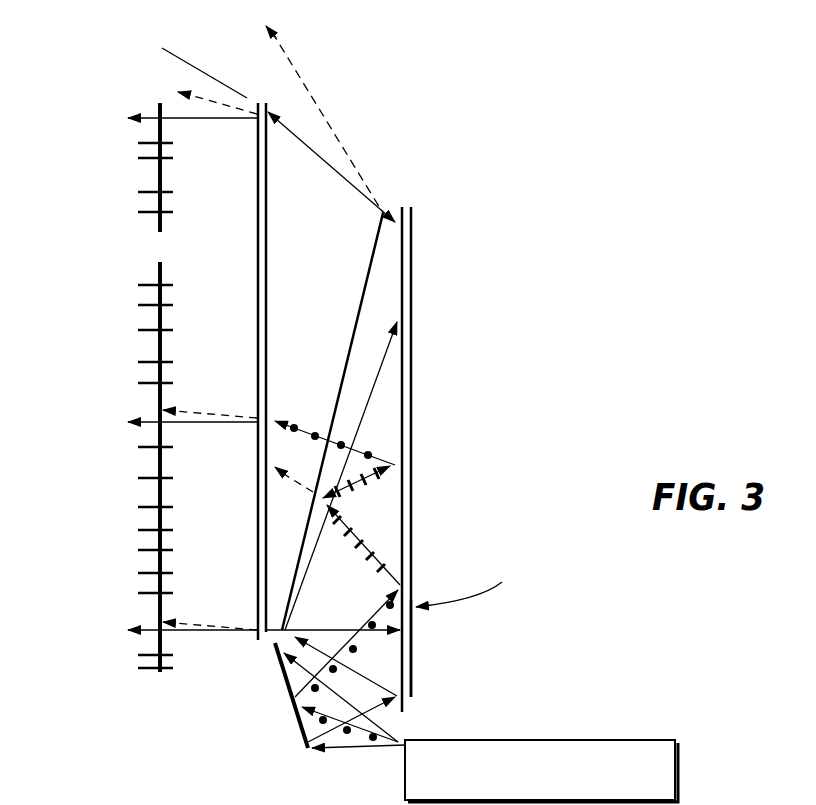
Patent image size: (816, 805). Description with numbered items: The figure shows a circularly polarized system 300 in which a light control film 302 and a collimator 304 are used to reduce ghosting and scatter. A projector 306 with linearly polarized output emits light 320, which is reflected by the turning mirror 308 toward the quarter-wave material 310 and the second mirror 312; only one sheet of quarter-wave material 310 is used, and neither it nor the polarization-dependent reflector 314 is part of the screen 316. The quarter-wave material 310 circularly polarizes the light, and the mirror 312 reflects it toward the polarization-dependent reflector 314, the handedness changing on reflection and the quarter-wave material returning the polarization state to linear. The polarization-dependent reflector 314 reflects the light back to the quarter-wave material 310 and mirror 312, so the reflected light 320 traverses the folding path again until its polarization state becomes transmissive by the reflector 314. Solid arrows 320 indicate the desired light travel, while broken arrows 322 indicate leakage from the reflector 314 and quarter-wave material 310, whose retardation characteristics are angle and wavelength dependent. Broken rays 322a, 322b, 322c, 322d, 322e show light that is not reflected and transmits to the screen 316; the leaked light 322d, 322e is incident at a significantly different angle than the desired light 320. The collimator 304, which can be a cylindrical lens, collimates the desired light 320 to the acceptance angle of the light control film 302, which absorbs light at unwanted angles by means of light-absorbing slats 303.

The circularly polarized system 300 is at (453, 195).
The light control film 302 is at (158, 103).
The slats 303 is at (143, 202).
The collimator 304 is at (267, 110).
The projector 306 is at (675, 778).
The turning mirror 308 is at (297, 727).
The quarter-wave material 310 is at (413, 708).
The second mirror 312 is at (412, 396).
The polarization-dependent reflector 314 is at (403, 355).
The screen 316 is at (258, 302).
The solid arrows (desired light) 320 is at (192, 122).
The broken arrows (leakage light) 322 is at (328, 124).
The broken ray 322a is at (208, 412).
The broken ray 322b is at (197, 622).
The broken ray 322c is at (212, 102).
The broken ray 322d is at (286, 622).
The broken ray 322e is at (300, 489).